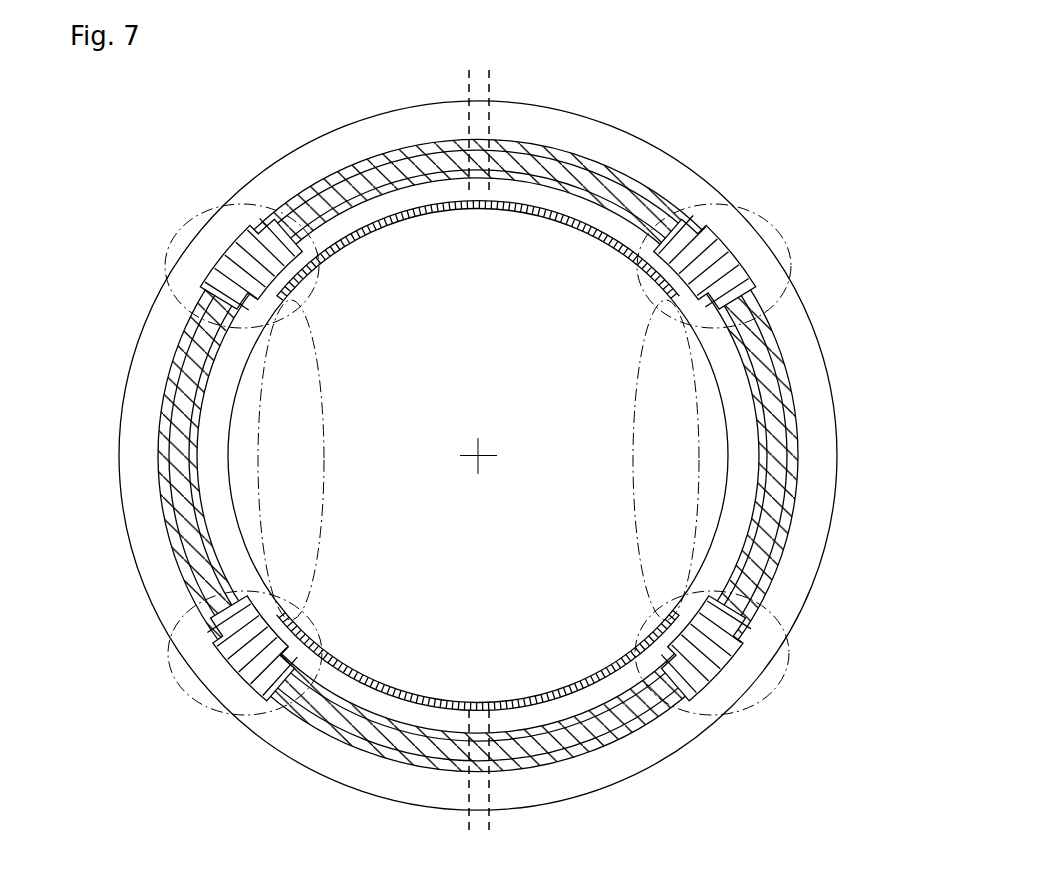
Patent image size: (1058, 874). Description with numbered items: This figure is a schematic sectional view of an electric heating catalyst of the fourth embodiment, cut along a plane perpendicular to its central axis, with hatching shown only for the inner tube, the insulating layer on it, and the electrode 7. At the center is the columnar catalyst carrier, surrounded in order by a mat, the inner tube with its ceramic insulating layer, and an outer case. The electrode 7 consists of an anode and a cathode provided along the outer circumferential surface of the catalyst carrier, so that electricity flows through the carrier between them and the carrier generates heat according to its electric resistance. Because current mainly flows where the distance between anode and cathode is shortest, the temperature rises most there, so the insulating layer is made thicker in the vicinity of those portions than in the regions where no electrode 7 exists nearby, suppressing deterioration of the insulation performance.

The electrode 7 is at (490, 84).